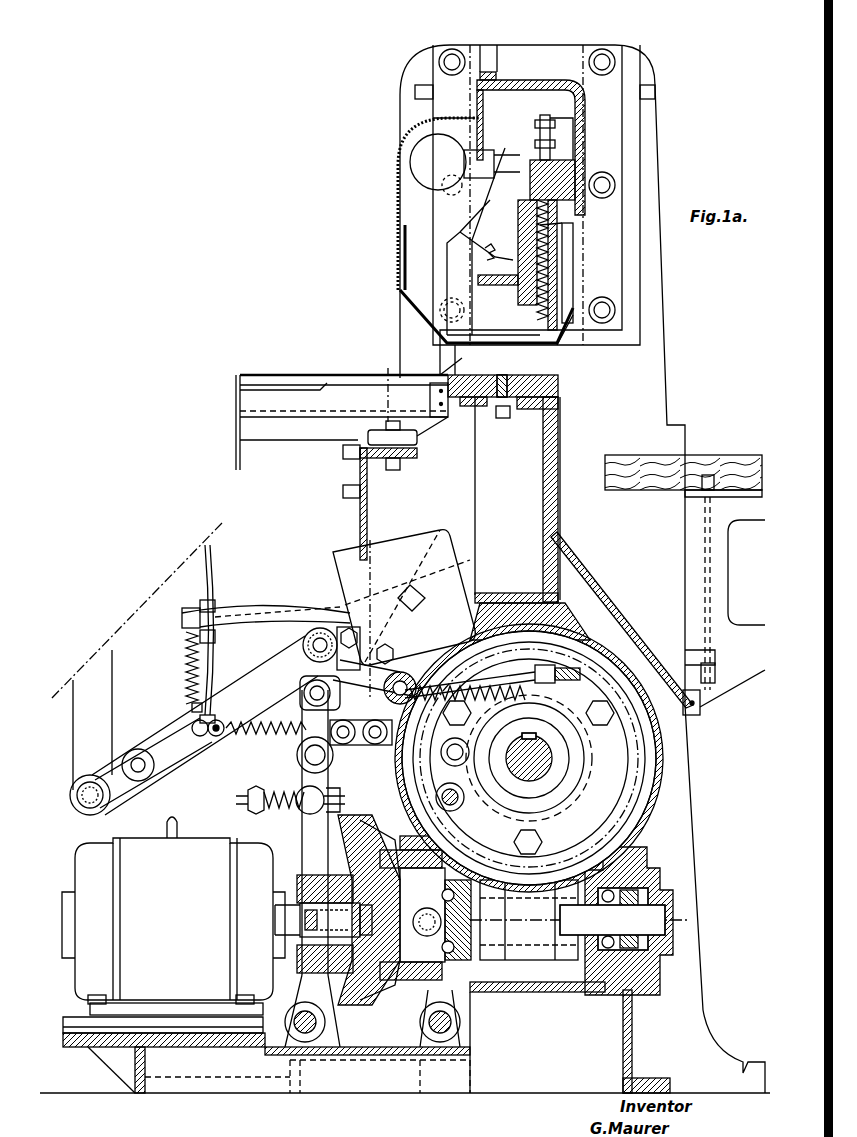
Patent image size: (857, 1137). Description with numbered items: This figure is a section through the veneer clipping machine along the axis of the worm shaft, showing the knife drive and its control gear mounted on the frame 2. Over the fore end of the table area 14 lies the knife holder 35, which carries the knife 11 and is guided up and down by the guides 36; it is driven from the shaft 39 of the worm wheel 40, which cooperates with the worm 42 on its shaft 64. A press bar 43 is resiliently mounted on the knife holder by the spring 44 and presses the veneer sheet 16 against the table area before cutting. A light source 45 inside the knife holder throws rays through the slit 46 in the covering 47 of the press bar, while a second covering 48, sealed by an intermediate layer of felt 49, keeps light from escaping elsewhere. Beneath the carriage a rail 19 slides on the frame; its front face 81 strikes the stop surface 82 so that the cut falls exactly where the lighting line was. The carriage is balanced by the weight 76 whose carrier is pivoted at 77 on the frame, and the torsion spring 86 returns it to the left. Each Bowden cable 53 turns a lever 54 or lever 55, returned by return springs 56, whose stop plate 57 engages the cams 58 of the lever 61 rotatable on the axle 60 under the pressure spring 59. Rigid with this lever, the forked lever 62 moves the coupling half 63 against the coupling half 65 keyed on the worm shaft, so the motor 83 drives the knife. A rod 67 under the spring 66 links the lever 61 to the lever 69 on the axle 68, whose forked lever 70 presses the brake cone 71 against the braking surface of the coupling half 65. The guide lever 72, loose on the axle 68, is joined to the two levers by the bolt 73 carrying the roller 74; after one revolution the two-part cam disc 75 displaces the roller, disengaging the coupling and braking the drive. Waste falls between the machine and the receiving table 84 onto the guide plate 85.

The frame 2 is at (660, 382).
The knife 11 is at (565, 330).
The table area 14 is at (478, 352).
The veneer sheet 16 is at (345, 375).
The rail 19 is at (268, 375).
The knife holder 35 is at (575, 140).
The guides 36 is at (575, 90).
The shaft 39 is at (552, 755).
The worm wheel 40 is at (650, 784).
The worm 42 is at (533, 982).
The press bar 43 is at (558, 345).
The spring 44 is at (560, 262).
The light source 45 is at (410, 160).
The slit 46 is at (445, 345).
The covering 47 is at (420, 290).
The second covering 48 is at (403, 275).
The intermediate layer of felt 49 is at (398, 238).
The Bowden cable 53 is at (212, 548).
The lever 54 is at (268, 715).
The lever 55 is at (153, 763).
The return springs 56 is at (250, 745).
The stop plate 57 is at (345, 745).
The cams 58 is at (300, 760).
The pressure spring 59 is at (495, 685).
The axle 60 is at (300, 1042).
The lever 61 is at (303, 822).
The forked lever 62 is at (300, 920).
The coupling half 63 is at (348, 1060).
The shaft 64 is at (580, 940).
The coupling half 65 is at (365, 1000).
The spring 66 is at (275, 808).
The rod 67 is at (377, 745).
The axle 68 is at (462, 1030).
The lever 69 is at (521, 842).
The forked lever 70 is at (412, 920).
The brake cone 71 is at (405, 990).
The guide lever 72 is at (462, 800).
The bolt 73 is at (465, 745).
The roller 74 is at (452, 783).
The cam disc 75 is at (548, 700).
The weight 76 is at (420, 528).
The pivot 77 is at (304, 650).
The front face 81 is at (325, 375).
The stop surface 82 is at (430, 383).
The motor 83 is at (190, 838).
The receiving table 84 is at (720, 455).
The guide plate 85 is at (640, 618).
The torsion spring 86 is at (115, 783).